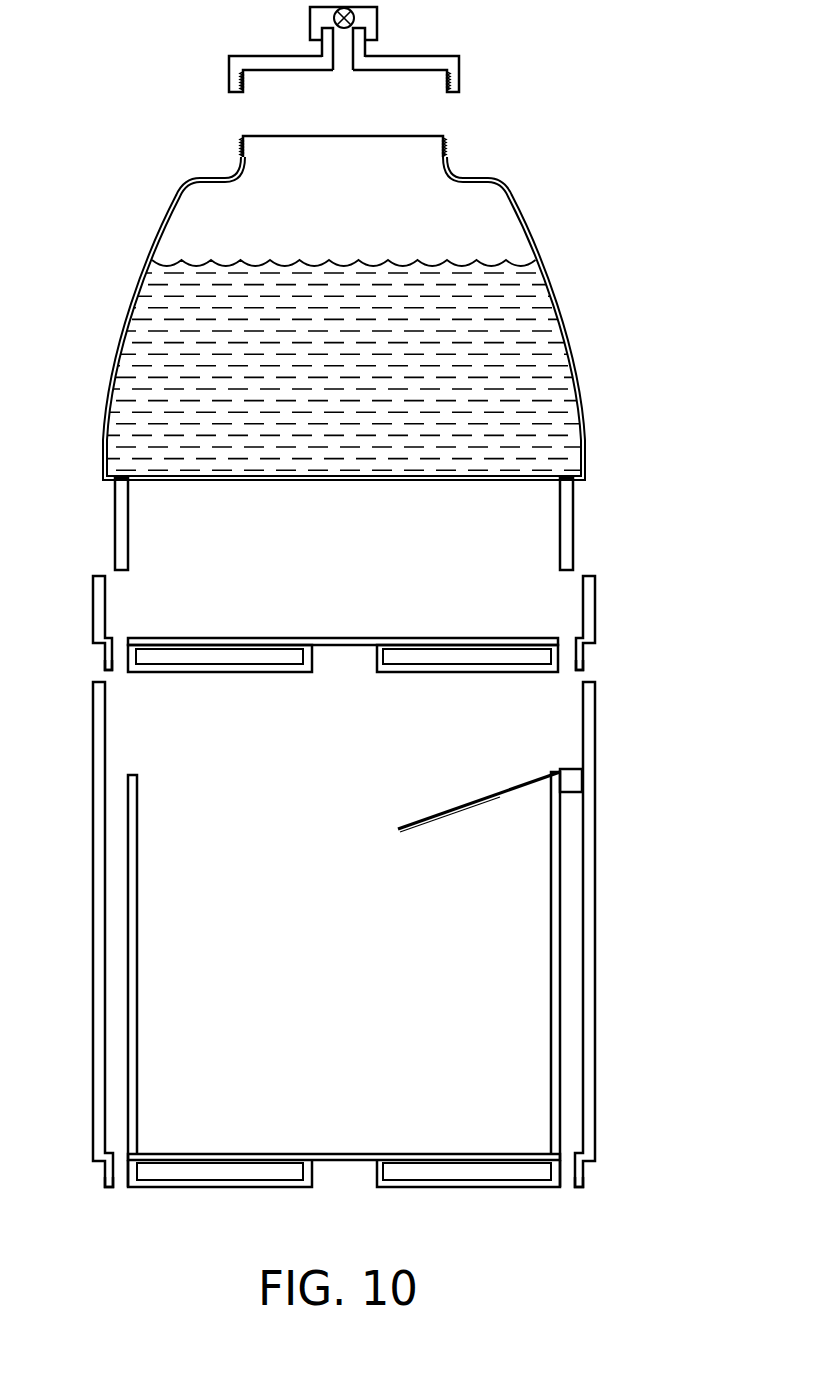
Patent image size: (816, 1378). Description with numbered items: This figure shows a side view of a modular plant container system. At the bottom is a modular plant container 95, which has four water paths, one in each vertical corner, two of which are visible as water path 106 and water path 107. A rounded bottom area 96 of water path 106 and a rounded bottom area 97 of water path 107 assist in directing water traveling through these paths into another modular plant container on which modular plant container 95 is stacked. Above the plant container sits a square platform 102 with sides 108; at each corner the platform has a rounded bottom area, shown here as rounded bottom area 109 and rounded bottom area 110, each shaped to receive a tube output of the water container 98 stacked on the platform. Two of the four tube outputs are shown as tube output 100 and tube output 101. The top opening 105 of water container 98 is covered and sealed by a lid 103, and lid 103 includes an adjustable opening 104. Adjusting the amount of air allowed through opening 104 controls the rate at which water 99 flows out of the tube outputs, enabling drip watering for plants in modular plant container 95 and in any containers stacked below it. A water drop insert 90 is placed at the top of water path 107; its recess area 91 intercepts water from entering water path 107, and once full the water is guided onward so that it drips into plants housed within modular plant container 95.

The water drop insert 90 is at (442, 818).
The recess area 91 is at (567, 776).
The modular plant container 95 is at (595, 1063).
The rounded bottom area 96 is at (118, 1188).
The rounded bottom area 97 is at (565, 1188).
The water container 98 is at (558, 313).
The water 99 is at (530, 385).
The tube output 100 is at (128, 536).
The tube output 101 is at (558, 536).
The square platform 102 is at (262, 673).
The lid 103 is at (459, 73).
The adjustable opening 104 is at (377, 17).
The top opening 105 is at (318, 134).
The water path 106 is at (118, 990).
The water path 107 is at (560, 988).
The sides 108 is at (595, 612).
The rounded bottom area 109 is at (118, 671).
The rounded bottom area 110 is at (568, 671).